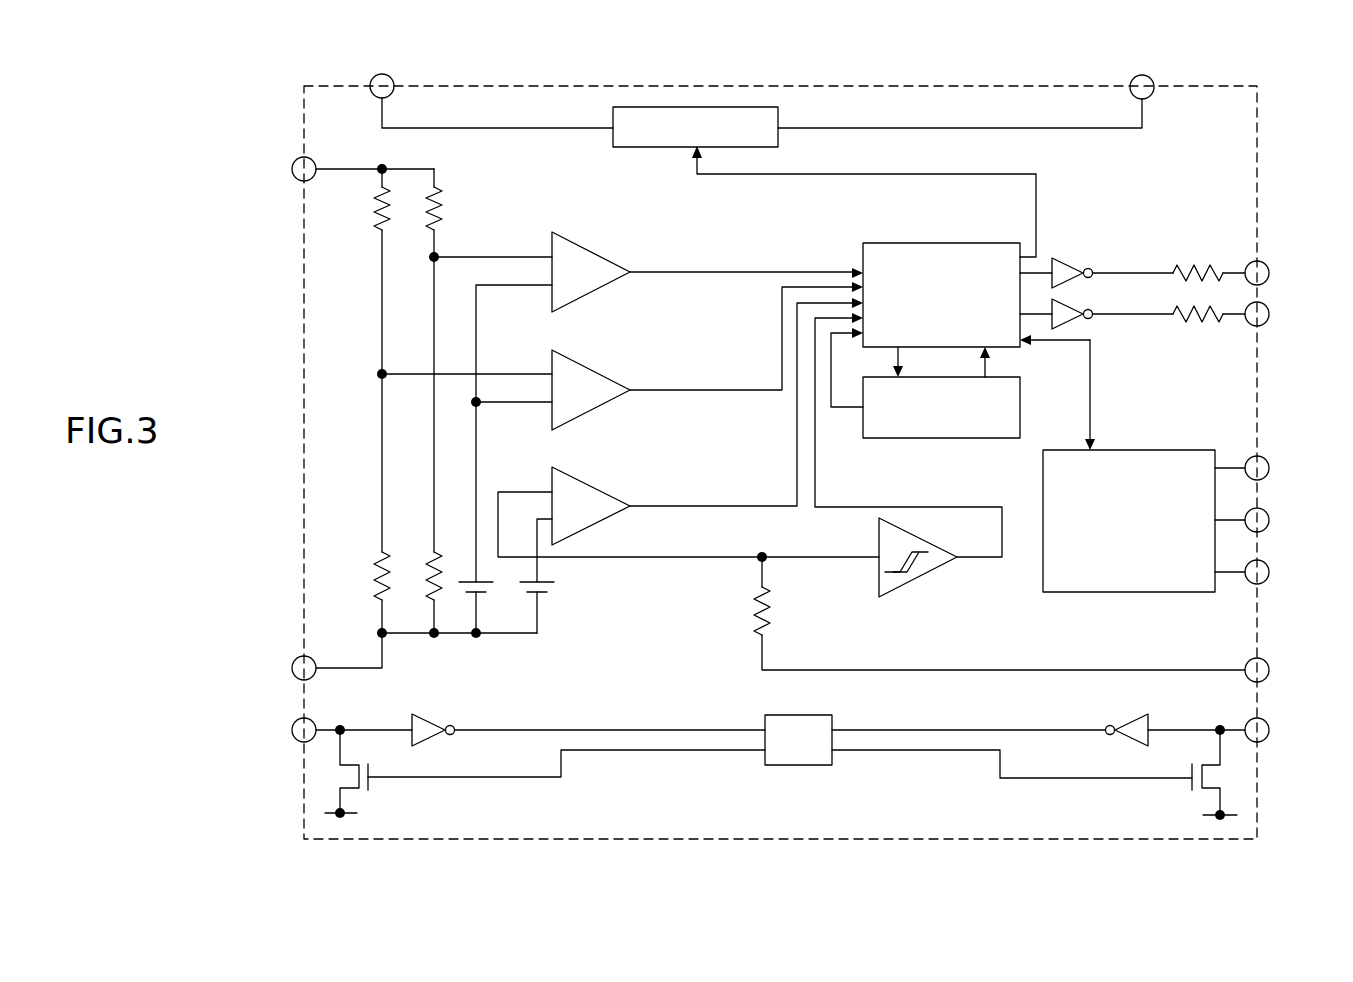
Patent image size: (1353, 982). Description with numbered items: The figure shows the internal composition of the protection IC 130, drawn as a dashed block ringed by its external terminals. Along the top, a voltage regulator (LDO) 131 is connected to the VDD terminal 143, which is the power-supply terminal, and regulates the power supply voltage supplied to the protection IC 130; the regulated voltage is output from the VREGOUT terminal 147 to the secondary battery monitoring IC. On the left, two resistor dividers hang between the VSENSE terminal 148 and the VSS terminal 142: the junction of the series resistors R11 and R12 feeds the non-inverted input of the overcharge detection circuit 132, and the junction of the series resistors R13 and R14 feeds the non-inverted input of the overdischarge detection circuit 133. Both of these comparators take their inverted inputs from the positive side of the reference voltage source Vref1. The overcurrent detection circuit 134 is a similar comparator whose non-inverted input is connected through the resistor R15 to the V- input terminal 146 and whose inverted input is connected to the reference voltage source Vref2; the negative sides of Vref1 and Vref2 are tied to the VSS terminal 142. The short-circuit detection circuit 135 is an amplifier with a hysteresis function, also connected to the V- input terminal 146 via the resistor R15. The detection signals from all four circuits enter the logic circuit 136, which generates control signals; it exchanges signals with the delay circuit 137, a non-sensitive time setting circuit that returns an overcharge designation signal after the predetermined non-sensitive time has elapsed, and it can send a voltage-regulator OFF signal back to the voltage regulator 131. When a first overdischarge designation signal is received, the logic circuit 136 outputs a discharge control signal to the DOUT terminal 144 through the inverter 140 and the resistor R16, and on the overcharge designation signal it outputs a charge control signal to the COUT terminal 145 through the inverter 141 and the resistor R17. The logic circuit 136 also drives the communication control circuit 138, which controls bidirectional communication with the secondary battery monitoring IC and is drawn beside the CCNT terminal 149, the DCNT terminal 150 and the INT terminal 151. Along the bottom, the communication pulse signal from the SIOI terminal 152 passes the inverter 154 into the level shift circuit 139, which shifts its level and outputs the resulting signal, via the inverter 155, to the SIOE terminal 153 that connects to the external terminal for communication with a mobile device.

The protection IC 130 is at (1257, 118).
The voltage regulator (LDO) 131 is at (778, 110).
The overcharge detection circuit 132 is at (583, 248).
The overdischarge detection circuit 133 is at (583, 366).
The overcurrent detection circuit 134 is at (583, 481).
The short-circuit detection circuit 135 is at (922, 583).
The logic circuit 136 is at (975, 243).
The delay circuit 137 is at (960, 438).
The communication control circuit 138 is at (1165, 450).
The level shift circuit 139 is at (832, 720).
The inverter 140 is at (1093, 268).
The inverter 141 is at (1093, 319).
The VSS terminal 142 is at (296, 657).
The VDD terminal 143 is at (383, 74).
The DOUT terminal 144 is at (1265, 263).
The COUT terminal 145 is at (1265, 324).
The V- input terminal 146 is at (1265, 660).
The VREGOUT terminal 147 is at (1140, 75).
The VSENSE terminal 148 is at (296, 158).
The CCNT terminal 149 is at (1265, 458).
The DCNT terminal 150 is at (1265, 510).
The INT terminal 151 is at (1265, 562).
The SIOI terminal 152 is at (298, 720).
The SIOE terminal 153 is at (1265, 720).
The inverter 154 is at (456, 726).
The inverter 155 is at (1106, 727).
The resistor R11 is at (459, 360).
The resistor R12 is at (425, 556).
The resistor R13 is at (357, 360).
The resistor R14 is at (359, 592).
The resistor R15 is at (975, 611).
The resistor R16 is at (1209, 257).
The resistor R17 is at (1209, 332).
The reference voltage source Vref1 is at (488, 590).
The reference voltage source Vref2 is at (564, 576).